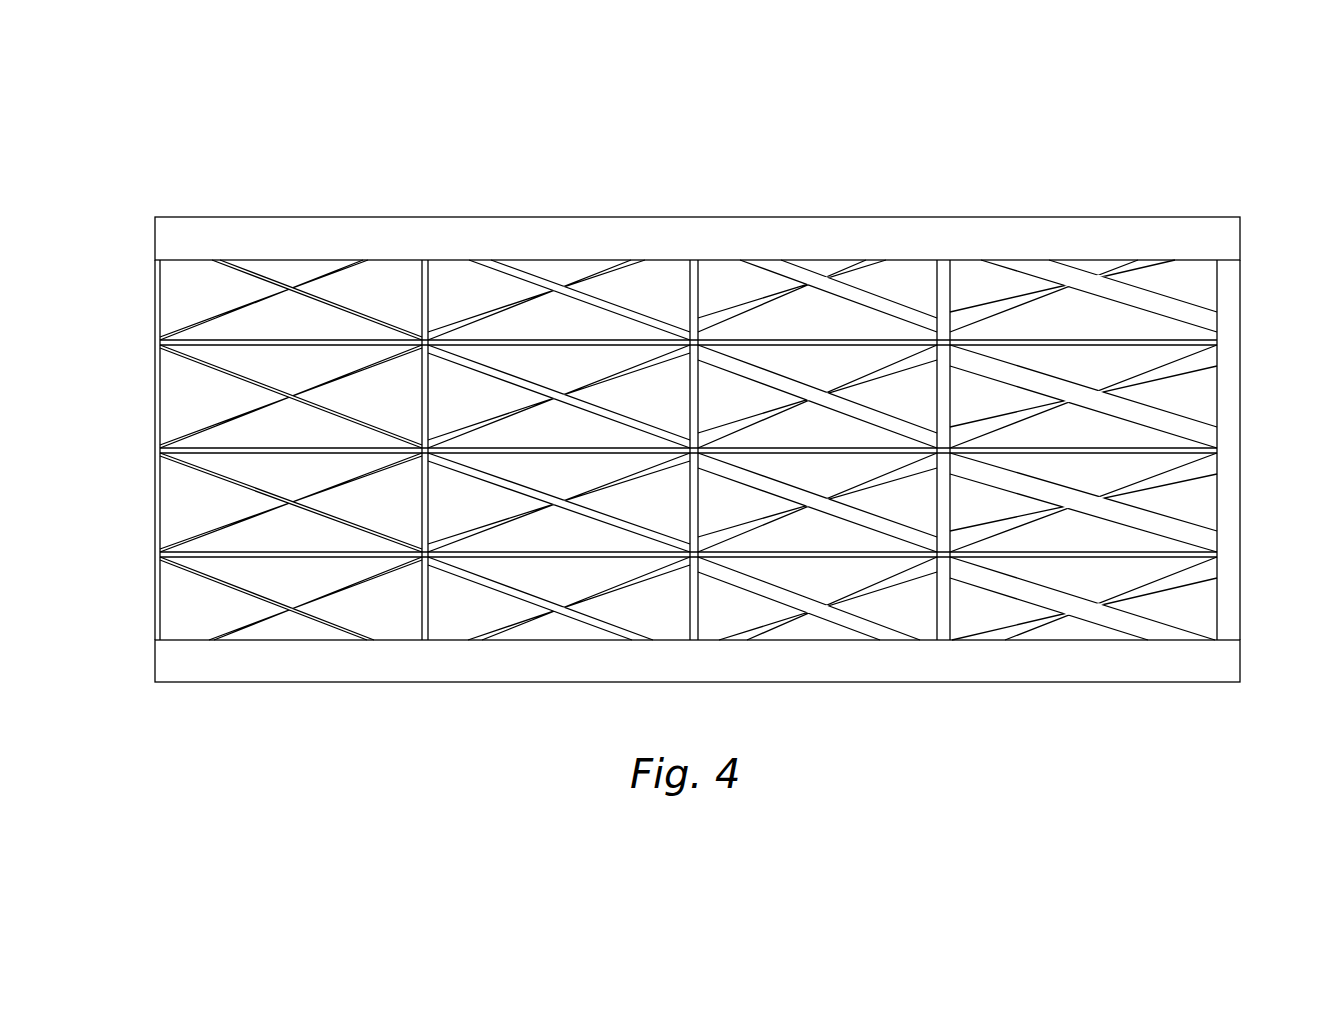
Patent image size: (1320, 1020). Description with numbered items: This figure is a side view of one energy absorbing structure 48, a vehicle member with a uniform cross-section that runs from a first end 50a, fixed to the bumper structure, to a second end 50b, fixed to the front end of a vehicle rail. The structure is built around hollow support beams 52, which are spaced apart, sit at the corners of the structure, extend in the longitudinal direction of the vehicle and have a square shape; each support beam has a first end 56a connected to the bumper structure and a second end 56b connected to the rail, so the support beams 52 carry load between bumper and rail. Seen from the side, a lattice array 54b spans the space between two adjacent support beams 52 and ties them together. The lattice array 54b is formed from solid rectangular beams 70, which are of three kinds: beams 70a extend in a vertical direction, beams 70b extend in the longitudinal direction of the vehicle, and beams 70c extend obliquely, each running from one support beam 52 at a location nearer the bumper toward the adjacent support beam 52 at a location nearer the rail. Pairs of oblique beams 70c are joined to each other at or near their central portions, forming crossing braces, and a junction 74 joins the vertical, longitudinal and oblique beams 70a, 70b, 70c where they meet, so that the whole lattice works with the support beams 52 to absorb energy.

The energy absorbing structure 48 is at (298, 198).
The first end 50a is at (258, 506).
The second end 50b is at (1258, 412).
The hollow support beam 52 is at (668, 235).
The lattice array 54b is at (312, 624).
The first end 56a is at (177, 237).
The second end 56b is at (1228, 233).
The beams 70 is at (687, 357).
The beam 70a is at (425, 300).
The beam 70b is at (739, 356).
The beam 70c is at (487, 308).
The junction 74 is at (685, 355).